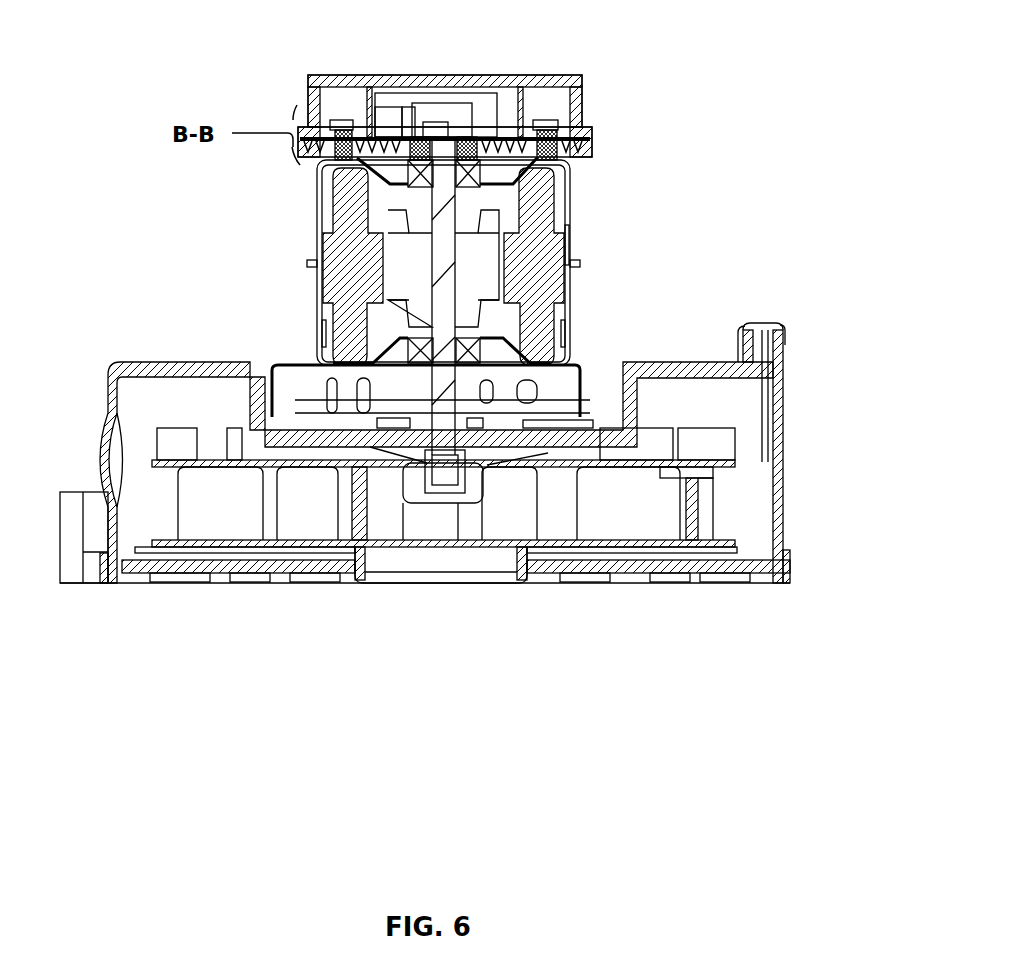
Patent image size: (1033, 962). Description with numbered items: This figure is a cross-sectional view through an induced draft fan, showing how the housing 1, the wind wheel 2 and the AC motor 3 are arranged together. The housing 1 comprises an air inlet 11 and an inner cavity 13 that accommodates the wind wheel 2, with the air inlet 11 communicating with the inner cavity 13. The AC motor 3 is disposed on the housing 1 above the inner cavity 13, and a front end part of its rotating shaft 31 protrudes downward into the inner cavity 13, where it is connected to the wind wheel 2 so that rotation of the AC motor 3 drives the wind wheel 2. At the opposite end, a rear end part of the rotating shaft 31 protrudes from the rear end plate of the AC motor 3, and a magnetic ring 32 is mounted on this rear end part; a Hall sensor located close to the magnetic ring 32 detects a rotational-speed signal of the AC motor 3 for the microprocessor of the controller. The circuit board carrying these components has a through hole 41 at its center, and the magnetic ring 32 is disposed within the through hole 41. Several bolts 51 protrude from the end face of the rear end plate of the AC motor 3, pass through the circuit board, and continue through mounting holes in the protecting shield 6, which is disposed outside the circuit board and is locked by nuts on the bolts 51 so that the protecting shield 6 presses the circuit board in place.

The housing 1 is at (112, 418).
The wind wheel 2 is at (265, 505).
The AC motor 3 is at (403, 268).
The protecting shield 6 is at (575, 107).
The air inlet 11 is at (440, 560).
The inner cavity 13 is at (735, 493).
The rotating shaft 31 is at (442, 308).
The magnetic ring 32 is at (523, 170).
The through hole 41 is at (483, 136).
The bolts 51 is at (313, 163).